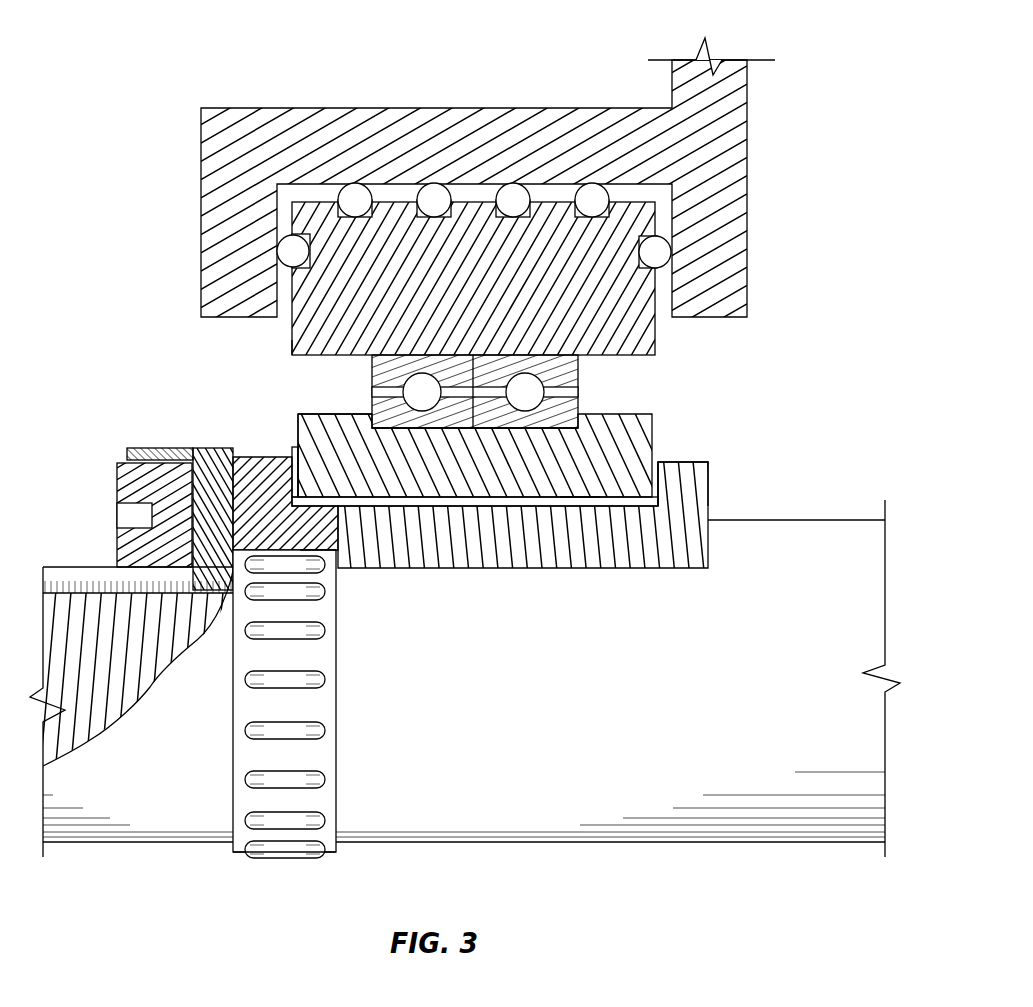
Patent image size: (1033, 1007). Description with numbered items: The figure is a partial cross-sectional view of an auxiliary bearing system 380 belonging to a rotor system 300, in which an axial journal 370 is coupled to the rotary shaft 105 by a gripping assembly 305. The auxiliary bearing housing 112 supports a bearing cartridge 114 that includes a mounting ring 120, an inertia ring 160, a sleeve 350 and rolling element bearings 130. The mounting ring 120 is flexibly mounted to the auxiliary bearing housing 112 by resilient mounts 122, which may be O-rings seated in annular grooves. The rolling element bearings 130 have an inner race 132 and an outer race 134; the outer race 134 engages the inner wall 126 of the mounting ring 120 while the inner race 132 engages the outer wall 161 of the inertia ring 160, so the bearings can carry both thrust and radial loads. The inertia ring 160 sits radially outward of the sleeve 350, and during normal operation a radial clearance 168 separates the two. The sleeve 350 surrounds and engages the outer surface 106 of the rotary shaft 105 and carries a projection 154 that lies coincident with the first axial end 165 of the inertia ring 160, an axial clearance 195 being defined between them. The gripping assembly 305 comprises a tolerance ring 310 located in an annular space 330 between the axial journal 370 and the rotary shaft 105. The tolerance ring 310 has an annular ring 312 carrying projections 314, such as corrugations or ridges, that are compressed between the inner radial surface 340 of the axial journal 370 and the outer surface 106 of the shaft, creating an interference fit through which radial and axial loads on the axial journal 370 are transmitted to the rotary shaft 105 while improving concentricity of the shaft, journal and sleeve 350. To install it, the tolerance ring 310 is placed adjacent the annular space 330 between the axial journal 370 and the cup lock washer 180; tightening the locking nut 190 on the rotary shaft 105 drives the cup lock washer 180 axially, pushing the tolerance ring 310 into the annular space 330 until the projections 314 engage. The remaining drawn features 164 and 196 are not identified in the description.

The rotor system 300 is at (128, 48).
The auxiliary bearing system 380 is at (155, 310).
The auxiliary bearing housing 112 is at (495, 155).
The bearing cartridge 114 is at (653, 373).
The mounting ring 120 is at (495, 288).
The resilient mounts 122 is at (592, 193).
The inner wall 126 is at (297, 357).
The rolling element bearings 130 is at (600, 383).
The inner race 132 is at (578, 426).
The outer race 134 is at (583, 370).
The inertia ring 160 is at (495, 480).
The outer wall 161 is at (347, 414).
The frame side wall 164 is at (296, 447).
The first axial end 165 is at (653, 437).
The radial clearance 168 is at (578, 503).
The cup lock washer 180 is at (212, 458).
The locking nut 190 is at (125, 483).
The axial clearance 195 is at (657, 487).
The side surface 196 is at (281, 486).
The projection 154 is at (708, 487).
The sleeve 350 is at (490, 555).
The axial journal 370 is at (282, 540).
The inner radial surface 340 is at (218, 600).
The annular space 330 is at (336, 560).
The tolerance ring 310 is at (233, 725).
The annular ring 312 is at (248, 795).
The projections 314 is at (320, 680).
The gripping assembly 305 is at (293, 862).
The rotary shaft 105 is at (530, 739).
The outer surface 106 is at (848, 520).